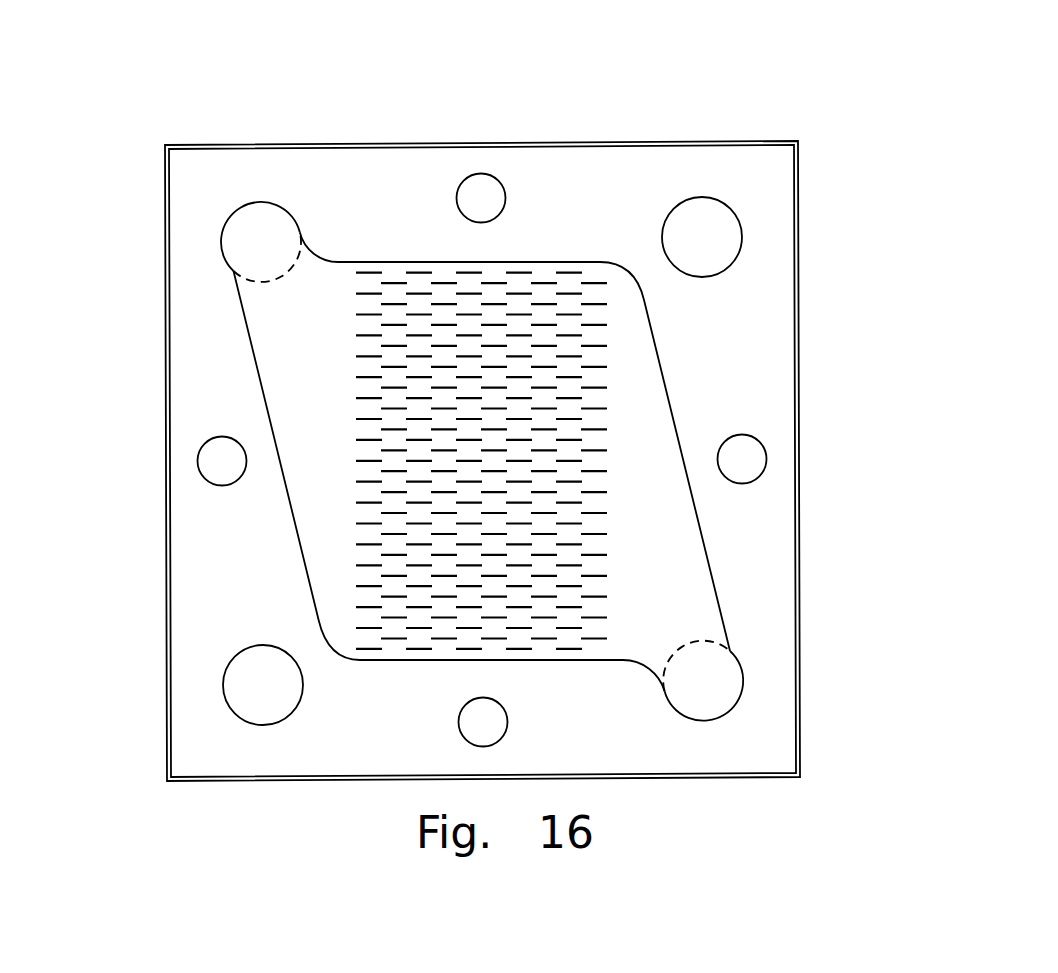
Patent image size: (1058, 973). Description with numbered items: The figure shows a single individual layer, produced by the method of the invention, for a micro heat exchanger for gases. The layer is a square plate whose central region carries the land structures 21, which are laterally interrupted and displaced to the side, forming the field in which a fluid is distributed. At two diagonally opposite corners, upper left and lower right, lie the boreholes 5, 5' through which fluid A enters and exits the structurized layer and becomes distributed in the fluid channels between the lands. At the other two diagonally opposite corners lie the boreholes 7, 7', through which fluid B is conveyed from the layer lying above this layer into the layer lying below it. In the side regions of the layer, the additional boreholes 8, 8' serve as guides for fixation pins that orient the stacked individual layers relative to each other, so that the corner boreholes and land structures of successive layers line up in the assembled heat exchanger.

The borehole 5 is at (262, 168).
The borehole 5' is at (806, 681).
The borehole 7 is at (741, 164).
The borehole 7' is at (175, 739).
The additional borehole 8 is at (581, 439).
The additional borehole 8' is at (499, 406).
The land structures 21 is at (610, 345).